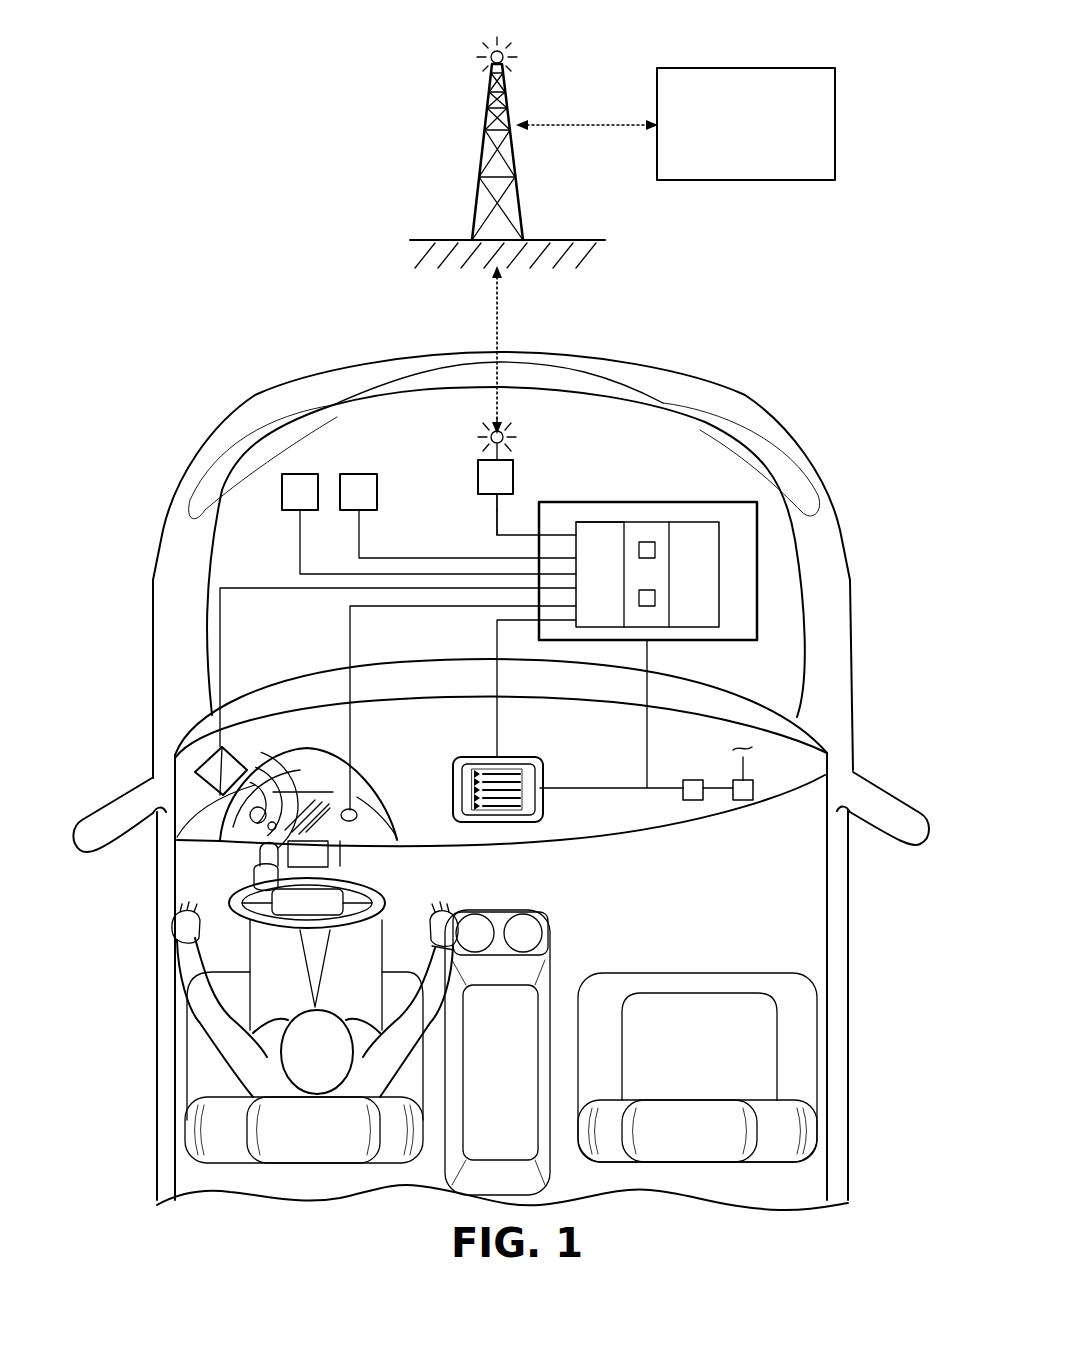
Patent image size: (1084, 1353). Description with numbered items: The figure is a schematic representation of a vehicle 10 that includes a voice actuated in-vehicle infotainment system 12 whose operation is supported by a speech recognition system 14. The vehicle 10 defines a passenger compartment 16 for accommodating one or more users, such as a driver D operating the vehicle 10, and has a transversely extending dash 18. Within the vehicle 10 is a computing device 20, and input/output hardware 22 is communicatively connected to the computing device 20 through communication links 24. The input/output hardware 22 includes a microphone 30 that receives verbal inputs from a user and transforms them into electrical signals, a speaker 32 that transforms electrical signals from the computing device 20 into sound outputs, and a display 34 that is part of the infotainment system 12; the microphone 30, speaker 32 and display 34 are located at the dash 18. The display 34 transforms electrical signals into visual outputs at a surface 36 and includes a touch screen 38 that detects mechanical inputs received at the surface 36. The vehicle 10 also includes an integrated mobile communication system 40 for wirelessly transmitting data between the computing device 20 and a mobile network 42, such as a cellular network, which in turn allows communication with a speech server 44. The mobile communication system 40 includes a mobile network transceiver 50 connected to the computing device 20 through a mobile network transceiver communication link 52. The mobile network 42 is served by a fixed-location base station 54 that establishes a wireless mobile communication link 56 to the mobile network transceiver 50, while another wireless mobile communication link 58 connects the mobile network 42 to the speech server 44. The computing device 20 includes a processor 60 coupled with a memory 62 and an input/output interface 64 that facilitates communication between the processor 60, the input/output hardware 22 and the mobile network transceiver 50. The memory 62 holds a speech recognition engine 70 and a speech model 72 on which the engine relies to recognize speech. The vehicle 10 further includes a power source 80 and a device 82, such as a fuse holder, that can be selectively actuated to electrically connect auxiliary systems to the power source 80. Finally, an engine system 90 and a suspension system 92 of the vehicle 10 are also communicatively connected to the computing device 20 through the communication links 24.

The vehicle 10 is at (333, 375).
The voice actuated in-vehicle infotainment (IVI) system 12 is at (543, 762).
The speech recognition system 14 is at (604, 422).
The passenger compartment 16 is at (609, 917).
The dash 18 is at (647, 830).
The computing device 20 is at (757, 512).
The input/output hardware 22 is at (368, 824).
The communication links 24 is at (300, 539).
The microphone 30 is at (352, 822).
The speaker 32 is at (222, 797).
The display 34 is at (541, 803).
The surface 36 is at (475, 777).
The touch screen 38 is at (475, 800).
The integrated mobile communication system 40 is at (490, 516).
The mobile network 42 is at (440, 165).
The speech server 44 is at (744, 187).
The mobile network transceiver 50 is at (478, 476).
The mobile network transceiver communication link 52 is at (490, 506).
The base station 54 is at (521, 202).
The wireless mobile communication link 56 is at (493, 342).
The wireless mobile communication link 58 is at (596, 120).
The processor 60 is at (690, 522).
The memory 62 is at (645, 522).
The input/output interface 64 is at (600, 522).
The speech recognition engine 70 is at (656, 550).
The speech model 72 is at (656, 598).
The power source 80 is at (742, 800).
The device 82 is at (692, 800).
The engine system 90 is at (300, 474).
The suspension system 92 is at (359, 474).
The driver D is at (212, 1047).